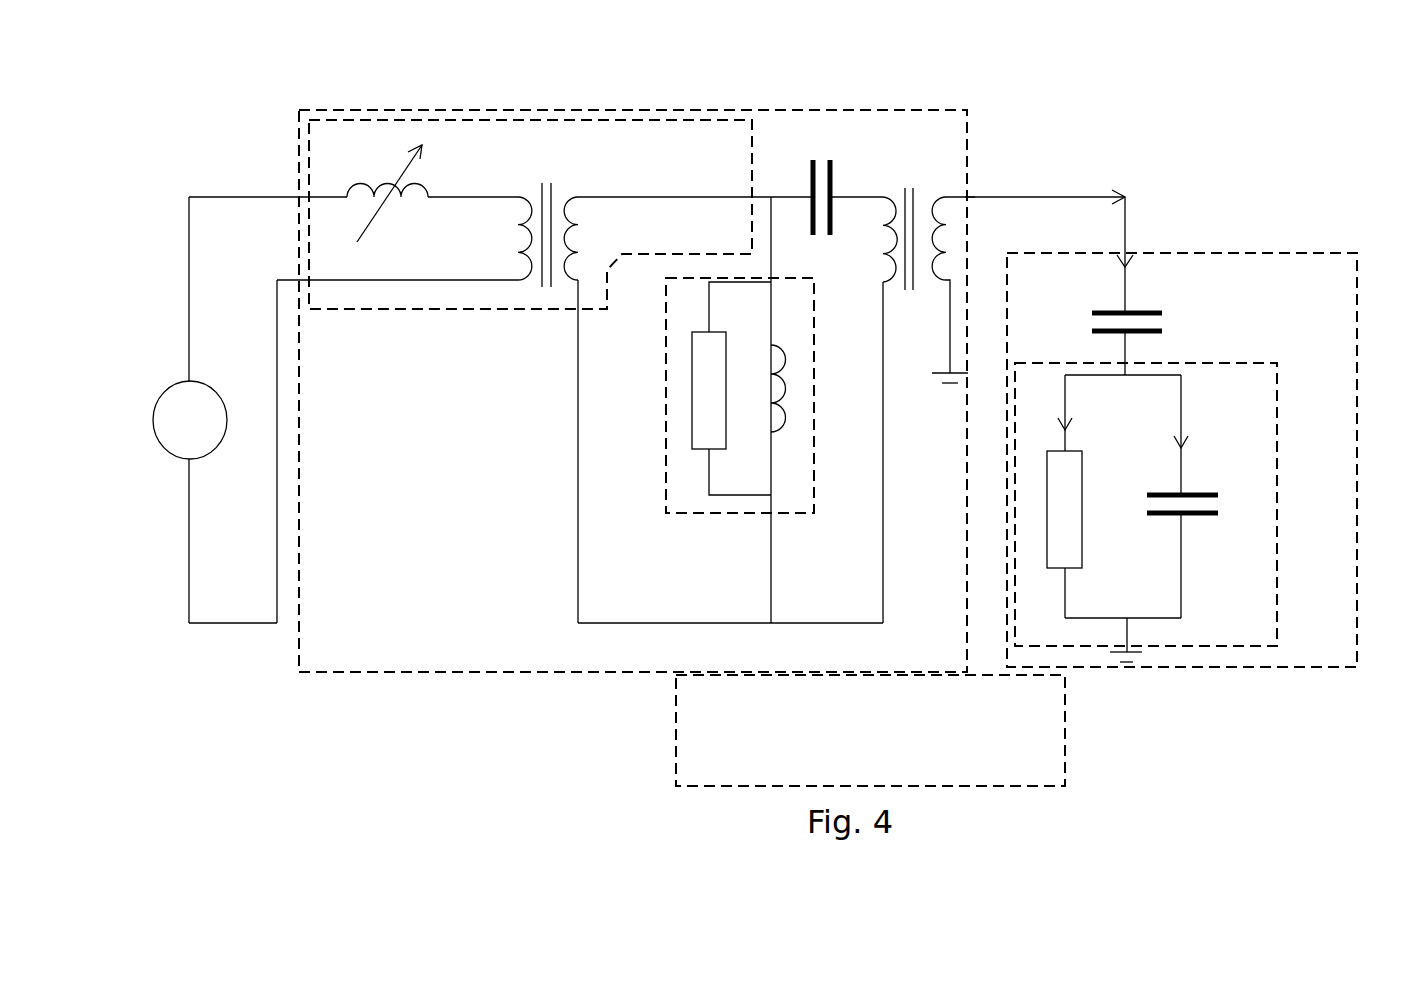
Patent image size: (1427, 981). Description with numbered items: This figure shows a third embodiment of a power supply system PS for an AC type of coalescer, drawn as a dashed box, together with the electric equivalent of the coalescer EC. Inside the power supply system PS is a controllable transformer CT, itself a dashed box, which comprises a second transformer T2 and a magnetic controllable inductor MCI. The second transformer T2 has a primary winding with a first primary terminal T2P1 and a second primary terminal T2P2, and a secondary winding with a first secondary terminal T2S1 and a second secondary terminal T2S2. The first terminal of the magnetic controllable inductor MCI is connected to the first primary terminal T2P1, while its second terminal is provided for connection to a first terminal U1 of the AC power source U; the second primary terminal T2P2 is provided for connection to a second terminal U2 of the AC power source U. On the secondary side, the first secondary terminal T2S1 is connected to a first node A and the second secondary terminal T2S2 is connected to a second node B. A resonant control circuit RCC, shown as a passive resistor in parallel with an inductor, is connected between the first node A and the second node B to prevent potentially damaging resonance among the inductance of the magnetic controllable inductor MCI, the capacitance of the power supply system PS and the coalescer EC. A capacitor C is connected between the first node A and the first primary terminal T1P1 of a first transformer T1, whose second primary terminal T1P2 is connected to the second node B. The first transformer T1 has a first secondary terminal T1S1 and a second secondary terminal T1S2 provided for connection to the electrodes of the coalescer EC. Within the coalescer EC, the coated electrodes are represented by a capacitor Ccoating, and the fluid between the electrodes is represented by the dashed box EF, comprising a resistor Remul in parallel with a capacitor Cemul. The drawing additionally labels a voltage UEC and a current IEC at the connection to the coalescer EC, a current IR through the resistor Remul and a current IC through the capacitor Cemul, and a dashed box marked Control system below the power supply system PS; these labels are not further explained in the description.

The power supply system PS is at (300, 117).
The controllable transformer CT is at (633, 128).
The magnetic controllable inductor MCI is at (425, 191).
The second transformer T2 is at (545, 377).
The first primary terminal of the second transformer T2P1 is at (504, 220).
The second primary terminal of the second transformer T2P2 is at (397, 272).
The first secondary terminal of the second transformer T2S1 is at (683, 220).
The second secondary terminal of the second transformer T2S2 is at (594, 443).
The first transformer T1 is at (971, 376).
The first primary terminal of the first transformer T1P1 is at (865, 226).
The second primary terminal of the first transformer T1P2 is at (850, 452).
The first secondary terminal of the first transformer T1S1 is at (1019, 222).
The second secondary terminal of the first transformer T1S2 is at (931, 331).
The capacitor C is at (841, 176).
The first node A is at (760, 394).
The second node B is at (730, 639).
The AC power source U is at (177, 410).
The first terminal of the AC power source U1 is at (260, 178).
The second terminal of the AC power source U2 is at (233, 473).
The resonant control circuit RCC is at (700, 513).
The electrochemical cell voltage UEC is at (988, 172).
The electrochemical cell current IEC is at (1102, 237).
The coalescer EC is at (1337, 262).
The electric equivalent of the fluid between the electrodes EF is at (1278, 435).
The coating capacitor Ccoating is at (1165, 344).
The emulsion resistor Remul is at (1092, 534).
The emulsion capacitor Cemul is at (1189, 556).
The resistive current IR is at (1044, 413).
The capacitive current IC is at (1190, 435).
The control system Control system is at (870, 730).